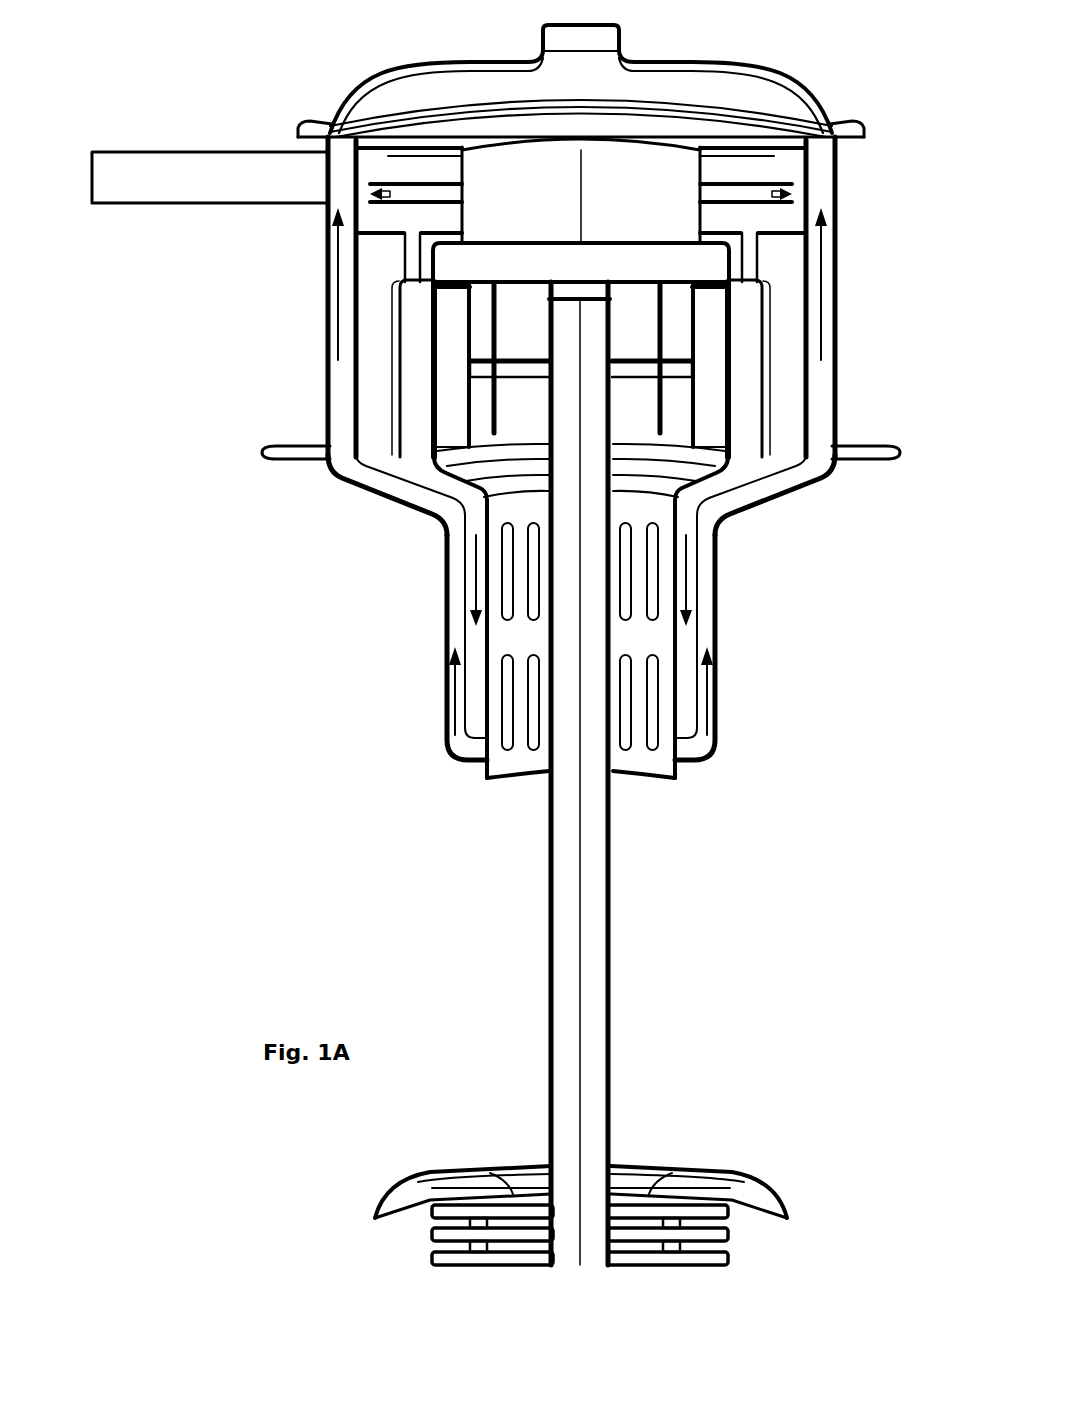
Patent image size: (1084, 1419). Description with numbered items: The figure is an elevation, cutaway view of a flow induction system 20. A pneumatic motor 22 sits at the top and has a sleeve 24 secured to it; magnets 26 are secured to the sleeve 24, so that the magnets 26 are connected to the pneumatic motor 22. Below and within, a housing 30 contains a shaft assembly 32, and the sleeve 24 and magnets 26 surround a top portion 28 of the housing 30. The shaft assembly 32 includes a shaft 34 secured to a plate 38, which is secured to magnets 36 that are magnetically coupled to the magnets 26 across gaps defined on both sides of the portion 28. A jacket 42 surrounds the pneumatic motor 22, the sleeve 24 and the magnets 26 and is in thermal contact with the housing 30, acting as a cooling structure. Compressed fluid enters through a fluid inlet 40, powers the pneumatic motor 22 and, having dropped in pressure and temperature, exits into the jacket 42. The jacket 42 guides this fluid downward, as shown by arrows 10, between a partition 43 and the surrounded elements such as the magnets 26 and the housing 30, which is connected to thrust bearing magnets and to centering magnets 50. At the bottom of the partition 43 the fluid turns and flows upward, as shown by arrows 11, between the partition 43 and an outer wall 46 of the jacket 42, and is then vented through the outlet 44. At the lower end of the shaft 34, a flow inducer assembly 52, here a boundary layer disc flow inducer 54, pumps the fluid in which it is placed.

The flow induction system 20 is at (222, 101).
The outlet 44 is at (583, 24).
The fluid inlet 40 is at (135, 198).
The pneumatic motor 22 is at (748, 172).
The sleeve 24 is at (403, 260).
The portion of the housing 28 is at (725, 258).
The magnets 26 is at (407, 330).
The magnets 36 is at (450, 398).
The plate 38 is at (510, 366).
The housing 30 is at (730, 441).
The jacket 42 is at (443, 560).
The outer wall 46 is at (443, 612).
The partition 43 is at (468, 597).
The arrows 10 is at (475, 572).
The arrows 11 is at (338, 288).
The centering magnets 50 is at (532, 752).
The shaft assembly 32 is at (612, 773).
The shaft 34 is at (570, 910).
The flow inducer assembly 52 is at (678, 1136).
The boundary layer disc flow inducer 54 is at (668, 1238).